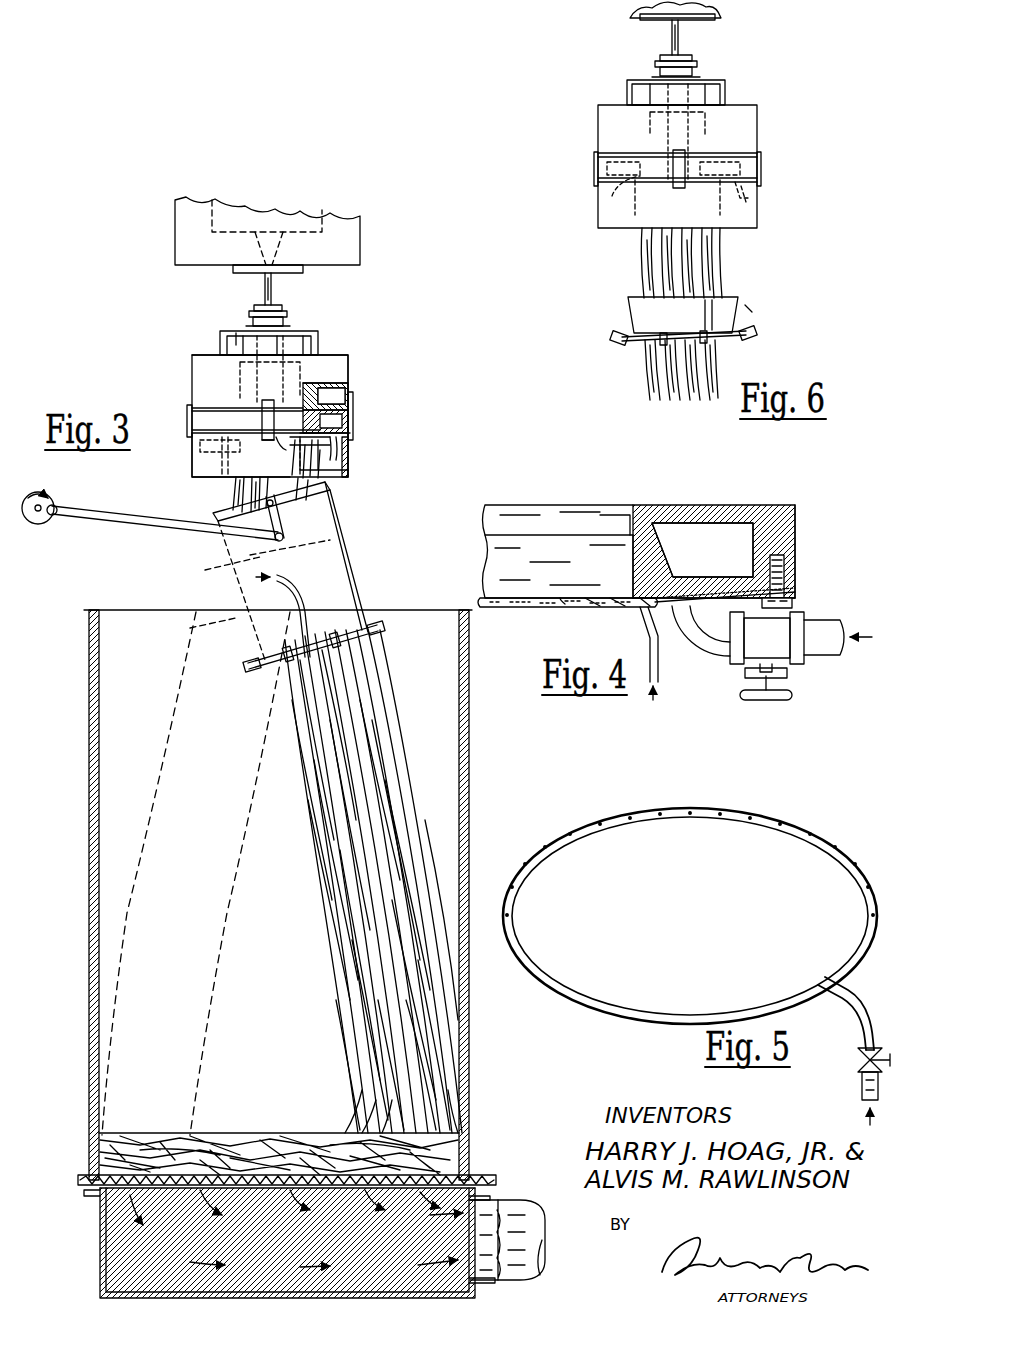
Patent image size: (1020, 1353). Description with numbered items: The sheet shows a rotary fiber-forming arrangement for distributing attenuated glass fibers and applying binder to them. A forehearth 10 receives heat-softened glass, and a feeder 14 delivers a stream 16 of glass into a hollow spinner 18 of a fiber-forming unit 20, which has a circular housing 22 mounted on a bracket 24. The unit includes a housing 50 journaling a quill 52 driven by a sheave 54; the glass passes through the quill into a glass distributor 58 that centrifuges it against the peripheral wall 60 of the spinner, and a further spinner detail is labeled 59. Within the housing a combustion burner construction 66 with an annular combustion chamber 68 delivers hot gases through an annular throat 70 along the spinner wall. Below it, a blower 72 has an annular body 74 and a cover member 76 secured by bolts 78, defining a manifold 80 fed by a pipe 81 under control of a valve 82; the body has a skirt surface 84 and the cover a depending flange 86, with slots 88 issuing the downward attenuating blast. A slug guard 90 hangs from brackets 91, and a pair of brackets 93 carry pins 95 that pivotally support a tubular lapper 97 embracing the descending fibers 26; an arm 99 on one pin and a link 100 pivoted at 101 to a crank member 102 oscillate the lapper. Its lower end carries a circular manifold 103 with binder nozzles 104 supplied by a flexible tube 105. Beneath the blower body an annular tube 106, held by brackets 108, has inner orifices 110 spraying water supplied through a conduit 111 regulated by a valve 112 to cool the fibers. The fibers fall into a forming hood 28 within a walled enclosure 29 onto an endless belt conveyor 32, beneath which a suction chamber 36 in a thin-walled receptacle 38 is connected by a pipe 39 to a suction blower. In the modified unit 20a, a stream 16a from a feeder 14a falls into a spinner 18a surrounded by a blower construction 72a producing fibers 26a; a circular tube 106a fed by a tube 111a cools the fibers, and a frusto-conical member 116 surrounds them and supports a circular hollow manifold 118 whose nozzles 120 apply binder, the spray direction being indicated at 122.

In FIG. 3, the forehearth 10 is at (360, 232).
In FIG. 3, the feeder 14 is at (233, 268).
In FIG. 3, the stream of glass 16 is at (266, 290).
In FIG. 3, the spinner 18 is at (290, 415).
In FIG. 3, the fiber-forming unit 20 is at (203, 350).
In FIG. 3, the circular housing 22 is at (192, 362).
In FIG. 3, the bracket 24 is at (314, 345).
In FIG. 3, the blast-attenuated fibers 26 is at (383, 727).
In FIG. 3, the forming hood 28 is at (296, 853).
In FIG. 3, the walled enclosure 29 is at (90, 798).
In FIG. 3, the endless belt conveyor 32 is at (96, 1175).
In FIG. 3, the suction chamber 36 is at (282, 1245).
In FIG. 3, the thin-walled receptacle 38 is at (100, 1240).
In FIG. 3, the pipe 39 is at (525, 1203).
In FIG. 3, the housing 50 is at (238, 333).
In FIG. 3, the quill 52 is at (252, 390).
In FIG. 3, the sheave 54 is at (284, 312).
In FIG. 3, the glass distributor 58 is at (280, 440).
In FIG. 3, the post guide 59 is at (290, 445).
In FIG. 3, the peripheral wall 60 is at (322, 458).
In FIG. 3, the combustion burner construction 66 is at (340, 400).
In FIG. 3, the annular combustion chamber 68 is at (330, 393).
In FIG. 3, the annular throat 70 is at (350, 408).
In FIG. 3, the blower 72 is at (354, 420).
In FIG. 4, the blower 72 is at (800, 525).
In FIG. 3, the annular body 74 is at (350, 434).
In FIG. 4, the annular body 74 is at (797, 594).
In FIG. 3, the annular cover member 76 is at (354, 430).
In FIG. 4, the annular cover member 76 is at (720, 506).
In FIG. 4, the bolts 78 is at (786, 560).
In FIG. 4, the annular blower manifold 80 is at (728, 565).
In FIG. 4, the pipe 81 is at (820, 646).
In FIG. 4, the valve 82 is at (766, 700).
In FIG. 4, the skirt surface 84 is at (633, 580).
In FIG. 4, the depending circular flange 86 is at (633, 515).
In FIG. 4, the slots 88 is at (625, 540).
In FIG. 3, the slug guard 90 is at (192, 468).
In FIG. 3, the brackets 91 is at (190, 405).
In FIG. 3, the brackets 93 is at (222, 493).
In FIG. 3, the pins 95 is at (283, 505).
In FIG. 3, the lapper 97 is at (205, 568).
In FIG. 3, the arm 99 is at (278, 537).
In FIG. 3, the link 100 is at (162, 530).
In FIG. 3, the pivotal connection 101 is at (58, 512).
In FIG. 3, the crank member 102 is at (28, 520).
In FIG. 3, the circular manifold 103 is at (280, 652).
In FIG. 3, the binder applicators 104 is at (280, 665).
In FIG. 3, the flexible binder conveying tube 105 is at (300, 590).
In FIG. 3, the annularly-shaped tube 106 is at (320, 452).
In FIG. 4, the annularly-shaped tube 106 is at (650, 608).
In FIG. 5, the annularly-shaped tube 106 is at (828, 848).
In FIG. 4, the brackets 108 is at (672, 612).
In FIG. 4, the orifices 110 is at (500, 610).
In FIG. 5, the orifices 110 is at (700, 812).
In FIG. 3, the supply conduit 111 is at (340, 446).
In FIG. 4, the supply conduit 111 is at (660, 672).
In FIG. 5, the supply conduit 111 is at (848, 1002).
In FIG. 5, the valve 112 is at (860, 1066).
In FIG. 6, the feeder 14a is at (640, 22).
In FIG. 6, the stream of glass 16a is at (672, 42).
In FIG. 6, the spinner 18a is at (706, 163).
In FIG. 6, the rotary fiber-forming unit 20a is at (740, 95).
In FIG. 6, the fibers 26a is at (642, 258).
In FIG. 6, the blower construction 72a is at (748, 172).
In FIG. 6, the circular tube 106a is at (612, 196).
In FIG. 6, the tube 111a is at (760, 197).
In FIG. 6, the frusto-conically shaped member 116 is at (632, 305).
In FIG. 6, the circular hollow manifold 118 is at (640, 338).
In FIG. 6, the nozzles 120 is at (627, 340).
In FIG. 6, the spray direction 122 is at (750, 310).